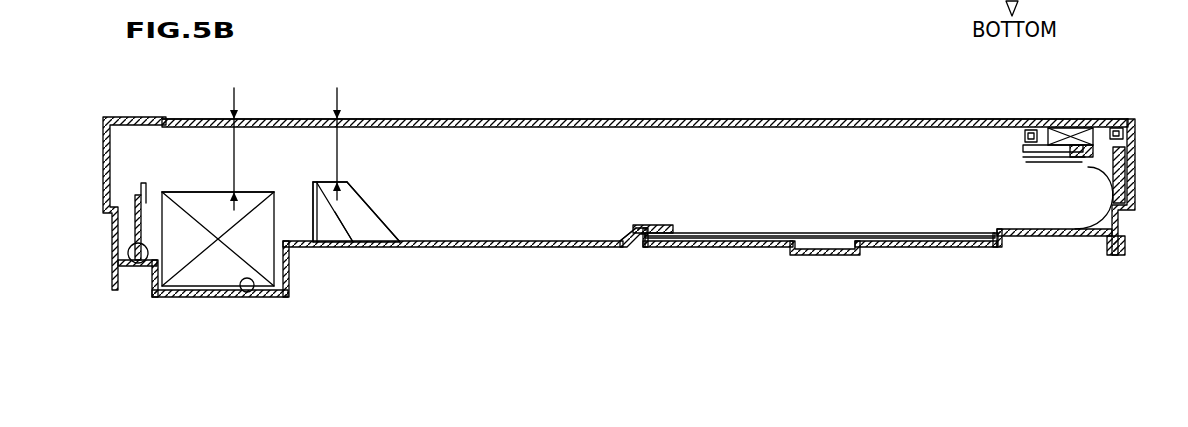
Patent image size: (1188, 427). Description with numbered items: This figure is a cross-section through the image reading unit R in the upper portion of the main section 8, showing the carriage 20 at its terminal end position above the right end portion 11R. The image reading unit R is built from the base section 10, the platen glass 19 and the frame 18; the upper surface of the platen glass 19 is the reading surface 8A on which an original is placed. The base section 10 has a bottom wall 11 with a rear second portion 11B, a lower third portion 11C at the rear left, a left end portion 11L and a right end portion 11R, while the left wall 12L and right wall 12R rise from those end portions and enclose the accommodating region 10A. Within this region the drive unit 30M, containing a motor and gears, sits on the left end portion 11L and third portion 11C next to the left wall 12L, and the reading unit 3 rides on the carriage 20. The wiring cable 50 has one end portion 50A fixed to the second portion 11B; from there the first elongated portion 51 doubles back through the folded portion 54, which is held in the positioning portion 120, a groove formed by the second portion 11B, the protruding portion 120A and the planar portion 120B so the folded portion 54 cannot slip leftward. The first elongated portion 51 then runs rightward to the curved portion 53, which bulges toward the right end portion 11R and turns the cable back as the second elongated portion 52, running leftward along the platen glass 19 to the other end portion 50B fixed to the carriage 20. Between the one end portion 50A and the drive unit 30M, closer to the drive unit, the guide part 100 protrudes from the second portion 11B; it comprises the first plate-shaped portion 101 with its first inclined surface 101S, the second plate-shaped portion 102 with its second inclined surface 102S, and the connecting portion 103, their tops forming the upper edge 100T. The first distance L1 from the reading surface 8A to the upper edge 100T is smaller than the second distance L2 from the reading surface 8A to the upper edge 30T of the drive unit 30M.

The frame 18 is at (106, 115).
The left wall 12L is at (107, 232).
The right wall 12R is at (1140, 195).
The main section 8 is at (1140, 143).
The reading surface 8A is at (592, 118).
The platen glass 19 is at (683, 118).
The base section 10 is at (179, 294).
The bottom wall 11 is at (512, 246).
The left end portion 11L is at (136, 264).
The right end portion 11R is at (1090, 238).
The second portion 11B is at (562, 249).
The third portion 11C is at (250, 292).
The drive unit 30M is at (219, 278).
The upper edge 30T is at (204, 190).
The first distance L1 is at (326, 142).
The second distance L2 is at (224, 147).
The guide part 100 is at (373, 186).
The upper edge 100T is at (318, 181).
The first plate-shaped portion 101 is at (335, 228).
The first inclined surface 101S is at (388, 222).
The second plate-shaped portion 102 is at (345, 238).
The second inclined surface 102S is at (339, 228).
The connecting portion 103 is at (312, 212).
The image reading unit R is at (486, 160).
The accommodating region 10A is at (775, 180).
The positioning portion 120 is at (667, 226).
The protruding portion 120A is at (645, 249).
The planar portion 120B is at (640, 226).
The folded portion 54 is at (633, 249).
The wiring cable 50 is at (868, 228).
The one end portion 50A is at (652, 244).
The other end portion 50B is at (1010, 138).
The first elongated portion 51 is at (992, 228).
The curved portion 53 is at (1102, 198).
The carriage 20 is at (1032, 130).
The reading unit 3 is at (1072, 128).
The second elongated portion 52 is at (1114, 128).